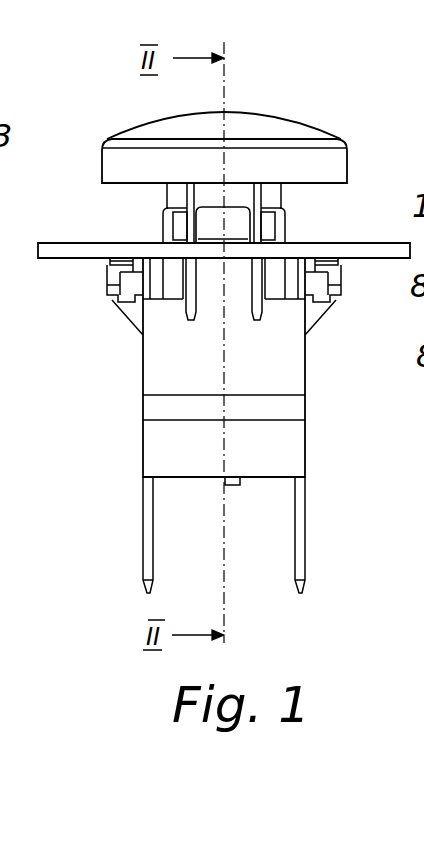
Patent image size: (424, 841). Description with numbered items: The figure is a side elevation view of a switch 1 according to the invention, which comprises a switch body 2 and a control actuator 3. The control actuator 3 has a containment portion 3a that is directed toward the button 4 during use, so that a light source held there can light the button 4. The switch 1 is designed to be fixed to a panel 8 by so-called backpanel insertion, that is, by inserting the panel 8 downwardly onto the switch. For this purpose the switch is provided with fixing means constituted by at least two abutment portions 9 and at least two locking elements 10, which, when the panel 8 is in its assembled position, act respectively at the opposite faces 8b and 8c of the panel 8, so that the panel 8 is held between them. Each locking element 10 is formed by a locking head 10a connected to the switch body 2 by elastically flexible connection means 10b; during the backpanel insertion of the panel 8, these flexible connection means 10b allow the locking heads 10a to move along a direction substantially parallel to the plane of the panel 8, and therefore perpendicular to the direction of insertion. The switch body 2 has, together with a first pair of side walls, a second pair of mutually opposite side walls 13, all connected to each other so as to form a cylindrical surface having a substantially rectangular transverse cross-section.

The switch 1 is at (100, 457).
The switch body 2 is at (175, 365).
The control actuator 3 is at (268, 232).
The containment portion 3a is at (175, 208).
The button 4 is at (300, 170).
The panel 8 is at (368, 255).
The face of the panel 8b is at (63, 242).
The face of the panel 8c is at (62, 260).
The abutment portions 9 is at (115, 272).
The locking elements 10 is at (242, 282).
The locking head 10a is at (227, 224).
The elastically flexible connection means 10b is at (235, 302).
The second pair of mutually opposite side walls 13 is at (285, 357).